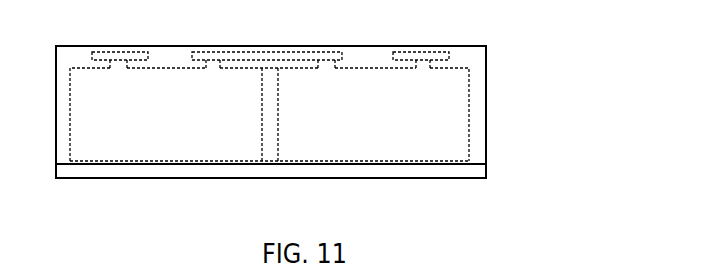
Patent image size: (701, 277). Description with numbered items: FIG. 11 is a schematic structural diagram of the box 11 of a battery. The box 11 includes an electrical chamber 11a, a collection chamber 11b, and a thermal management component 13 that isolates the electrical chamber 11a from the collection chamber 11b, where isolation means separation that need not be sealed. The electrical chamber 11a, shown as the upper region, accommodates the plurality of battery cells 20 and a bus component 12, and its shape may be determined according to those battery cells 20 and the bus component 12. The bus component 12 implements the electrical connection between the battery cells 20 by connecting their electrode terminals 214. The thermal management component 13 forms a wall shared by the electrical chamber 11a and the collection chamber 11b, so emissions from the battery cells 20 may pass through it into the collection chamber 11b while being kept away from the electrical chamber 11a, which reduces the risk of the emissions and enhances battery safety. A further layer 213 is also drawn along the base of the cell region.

The box 11 is at (182, 46).
The electrical chamber 11a is at (472, 59).
The collection chamber 11b is at (475, 178).
The bus component 12 is at (327, 54).
The thermal management component 13 is at (475, 162).
The battery cells 20 is at (460, 108).
The conductive layer 213 is at (163, 162).
The electrode terminals 214 is at (213, 63).